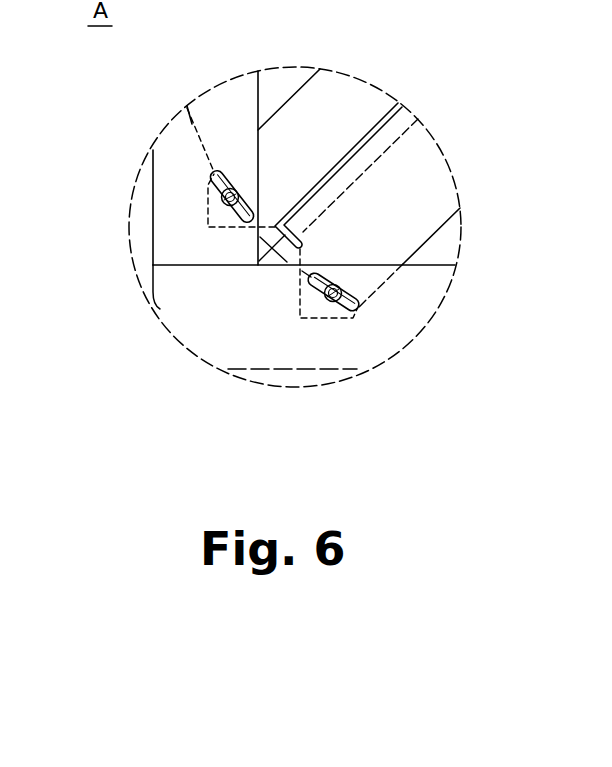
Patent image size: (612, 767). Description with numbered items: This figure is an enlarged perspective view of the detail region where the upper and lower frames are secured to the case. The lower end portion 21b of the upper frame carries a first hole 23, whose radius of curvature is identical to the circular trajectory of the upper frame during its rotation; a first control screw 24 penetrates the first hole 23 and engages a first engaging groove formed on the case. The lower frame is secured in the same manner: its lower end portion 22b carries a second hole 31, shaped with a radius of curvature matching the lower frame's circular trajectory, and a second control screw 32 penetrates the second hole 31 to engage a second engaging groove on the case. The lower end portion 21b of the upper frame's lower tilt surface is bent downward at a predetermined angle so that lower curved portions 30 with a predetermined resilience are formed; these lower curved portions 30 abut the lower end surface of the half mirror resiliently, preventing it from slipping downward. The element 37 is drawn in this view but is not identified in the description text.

The lower end portion of the upper frame 21b is at (216, 219).
The lower end portion of the lower frame 22b is at (301, 302).
The first hole 23 is at (214, 173).
The first control screw 24 is at (224, 198).
The lower curved portions 30 is at (258, 265).
The second hole 31 is at (358, 307).
The second control screw 32 is at (334, 302).
The hidden center line 37 is at (187, 108).